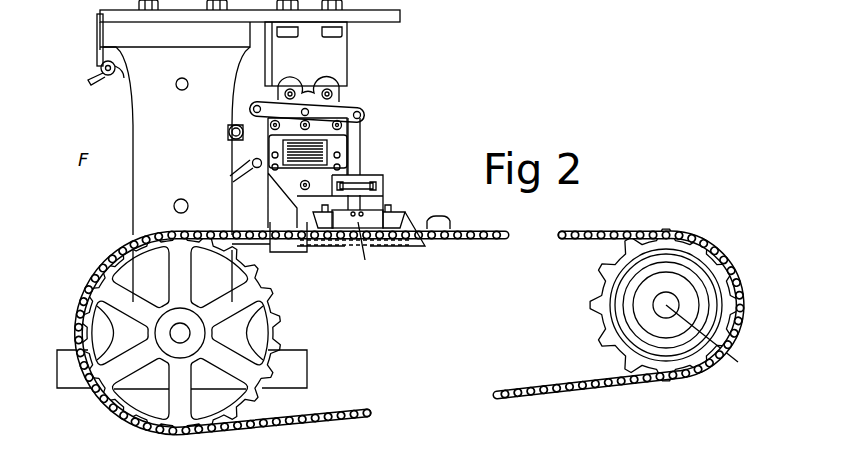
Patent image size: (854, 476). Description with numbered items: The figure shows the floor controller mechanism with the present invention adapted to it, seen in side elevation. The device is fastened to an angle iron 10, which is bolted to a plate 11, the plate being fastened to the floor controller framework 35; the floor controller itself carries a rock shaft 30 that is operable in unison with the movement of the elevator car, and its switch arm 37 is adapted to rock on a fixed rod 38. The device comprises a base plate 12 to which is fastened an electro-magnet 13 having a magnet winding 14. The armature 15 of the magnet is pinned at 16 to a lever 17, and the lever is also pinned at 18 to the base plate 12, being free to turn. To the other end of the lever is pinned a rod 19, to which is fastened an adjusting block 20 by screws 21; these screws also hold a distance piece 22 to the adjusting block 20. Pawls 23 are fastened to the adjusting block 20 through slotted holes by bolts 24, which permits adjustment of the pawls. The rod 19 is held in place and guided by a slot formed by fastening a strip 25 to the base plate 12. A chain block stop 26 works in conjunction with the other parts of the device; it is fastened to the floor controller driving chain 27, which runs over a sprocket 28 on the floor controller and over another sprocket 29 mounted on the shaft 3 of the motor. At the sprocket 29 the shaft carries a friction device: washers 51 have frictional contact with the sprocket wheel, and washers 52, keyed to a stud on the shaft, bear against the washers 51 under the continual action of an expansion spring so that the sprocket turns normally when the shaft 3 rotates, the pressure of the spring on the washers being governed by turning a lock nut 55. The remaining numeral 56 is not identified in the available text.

The shaft 3 is at (712, 338).
The angle iron 10 is at (328, 50).
The plate 11 is at (400, 16).
The base plate 12 is at (340, 93).
The electro-magnet 13 is at (342, 163).
The magnet winding 14 is at (284, 168).
The armature 15 is at (350, 131).
The pin 16 is at (306, 104).
The lever 17 is at (363, 110).
The pin 18 is at (257, 101).
The rod 19 is at (361, 148).
The adjusting block 20 is at (385, 219).
The screws 21 is at (369, 251).
The distance piece 22 is at (343, 222).
The pawls 23 is at (326, 222).
The bolts 24 is at (316, 209).
The strip 25 is at (384, 186).
The chain block stop 26 is at (447, 220).
The floor controller driving chain 27 is at (565, 236).
The sprocket 28 is at (272, 303).
The sprocket 29 is at (596, 306).
The rock shaft 30 is at (176, 201).
The controller framework 35 is at (137, 37).
The arm 37 is at (121, 77).
The fixed rod 38 is at (186, 79).
The washers 51 is at (700, 256).
The washers 52 is at (703, 270).
The lock nut 55 is at (694, 308).
The ring 56 is at (703, 292).